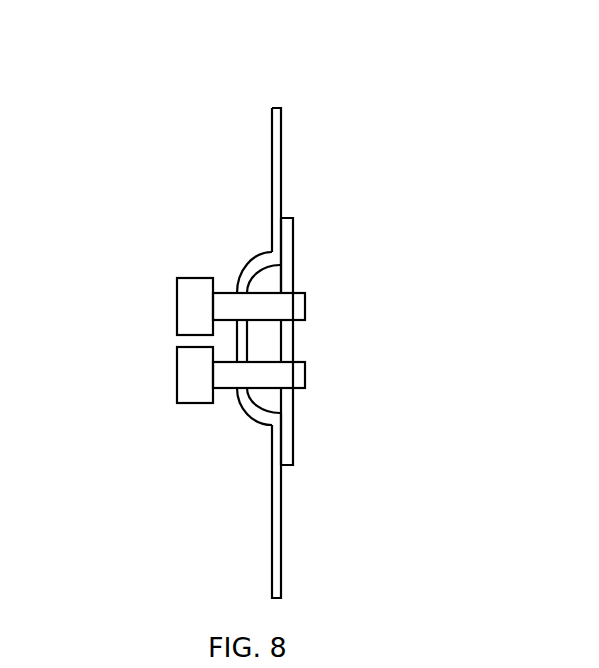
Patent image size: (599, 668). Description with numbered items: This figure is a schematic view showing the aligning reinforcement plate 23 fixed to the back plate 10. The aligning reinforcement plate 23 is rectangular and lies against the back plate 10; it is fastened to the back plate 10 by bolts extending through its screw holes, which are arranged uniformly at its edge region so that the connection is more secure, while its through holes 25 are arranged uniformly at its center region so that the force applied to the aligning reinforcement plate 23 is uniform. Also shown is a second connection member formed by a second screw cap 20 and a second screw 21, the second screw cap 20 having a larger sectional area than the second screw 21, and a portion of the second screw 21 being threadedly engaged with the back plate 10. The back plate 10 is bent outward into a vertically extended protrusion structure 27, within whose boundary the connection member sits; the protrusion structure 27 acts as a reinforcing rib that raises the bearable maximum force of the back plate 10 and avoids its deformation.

The back plate 10 is at (273, 138).
The second screw cap 20 is at (195, 370).
The second screw 21 is at (248, 372).
The aligning reinforcement plate 23 is at (290, 250).
The through hole 25 is at (287, 308).
The protrusion structure 27 is at (245, 280).